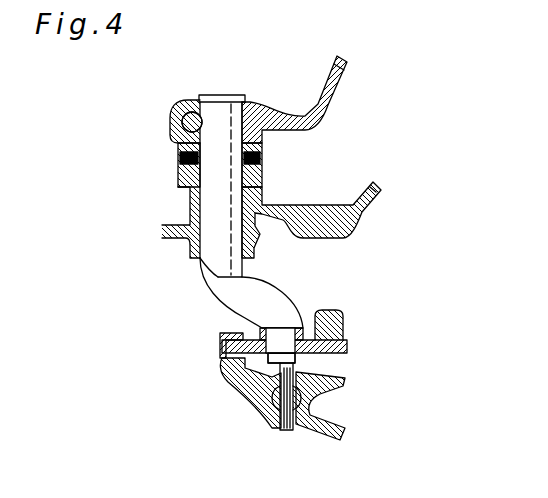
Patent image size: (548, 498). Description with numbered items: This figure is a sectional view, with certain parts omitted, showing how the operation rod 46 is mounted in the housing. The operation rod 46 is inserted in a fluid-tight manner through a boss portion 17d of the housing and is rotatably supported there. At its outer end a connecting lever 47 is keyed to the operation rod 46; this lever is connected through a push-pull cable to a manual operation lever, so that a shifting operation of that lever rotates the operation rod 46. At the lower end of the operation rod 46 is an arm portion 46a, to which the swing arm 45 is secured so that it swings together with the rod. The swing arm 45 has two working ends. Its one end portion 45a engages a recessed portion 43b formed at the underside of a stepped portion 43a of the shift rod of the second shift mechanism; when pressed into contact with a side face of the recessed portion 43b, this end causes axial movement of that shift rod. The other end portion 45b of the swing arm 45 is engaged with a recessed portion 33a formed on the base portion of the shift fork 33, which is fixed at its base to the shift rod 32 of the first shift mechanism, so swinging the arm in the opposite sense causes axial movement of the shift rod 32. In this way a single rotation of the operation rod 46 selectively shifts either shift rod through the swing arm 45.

The connecting lever 47 is at (273, 111).
The operation rod 46 is at (212, 185).
The boss portion 17d is at (255, 227).
The arm portion 46a is at (235, 300).
The stepped portion 43a is at (330, 310).
The recessed portion 43b is at (348, 344).
The one end portion 45a is at (332, 356).
The another end portion 45b is at (220, 337).
The recessed portion 33a is at (222, 356).
The swing arm 45 is at (266, 373).
The shift rod 32 is at (276, 401).
The shift fork 33 is at (338, 384).